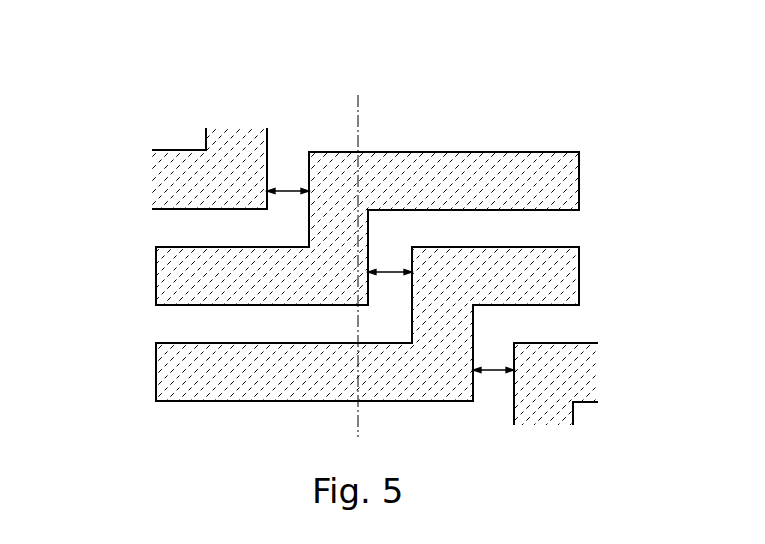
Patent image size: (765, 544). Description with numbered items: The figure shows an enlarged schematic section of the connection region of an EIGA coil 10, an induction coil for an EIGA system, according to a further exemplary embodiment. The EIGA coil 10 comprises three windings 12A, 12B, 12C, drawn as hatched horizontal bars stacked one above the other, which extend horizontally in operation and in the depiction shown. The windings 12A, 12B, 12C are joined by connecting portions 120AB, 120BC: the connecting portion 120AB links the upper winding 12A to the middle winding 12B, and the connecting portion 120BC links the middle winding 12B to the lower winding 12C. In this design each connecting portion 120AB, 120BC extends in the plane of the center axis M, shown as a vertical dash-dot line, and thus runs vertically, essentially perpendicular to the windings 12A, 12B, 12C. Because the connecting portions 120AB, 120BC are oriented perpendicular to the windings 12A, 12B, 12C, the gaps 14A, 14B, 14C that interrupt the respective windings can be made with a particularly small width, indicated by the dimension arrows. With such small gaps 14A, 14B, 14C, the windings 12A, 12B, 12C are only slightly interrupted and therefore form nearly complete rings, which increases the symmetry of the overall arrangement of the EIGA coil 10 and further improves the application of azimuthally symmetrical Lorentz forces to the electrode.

The EIGA coil 10 is at (142, 106).
The winding 12A is at (506, 170).
The winding 12B is at (563, 270).
The winding 12C is at (183, 376).
The connecting portion 120AB is at (325, 232).
The connecting portion 120BC is at (450, 333).
The gap 14A is at (286, 172).
The gap 14B is at (388, 292).
The gap 14C is at (492, 384).
The center axis M is at (360, 107).